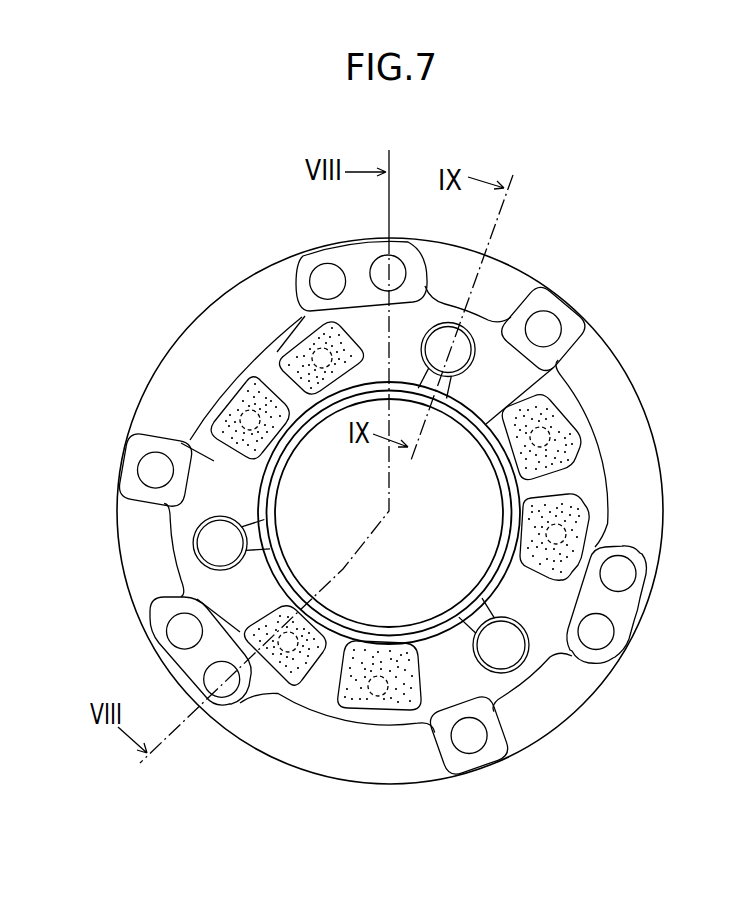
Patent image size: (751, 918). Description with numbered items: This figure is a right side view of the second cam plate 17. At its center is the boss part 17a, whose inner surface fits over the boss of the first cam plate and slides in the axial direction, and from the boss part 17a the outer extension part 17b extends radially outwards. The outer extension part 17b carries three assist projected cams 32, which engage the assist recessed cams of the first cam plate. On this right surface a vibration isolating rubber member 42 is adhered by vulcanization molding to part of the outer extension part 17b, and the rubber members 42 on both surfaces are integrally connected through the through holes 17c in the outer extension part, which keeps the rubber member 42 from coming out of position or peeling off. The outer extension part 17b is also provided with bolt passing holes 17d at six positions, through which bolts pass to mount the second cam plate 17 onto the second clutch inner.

The second cam plate 17 is at (591, 177).
The boss part 17a is at (503, 525).
The outer extension part 17b is at (595, 403).
The through hole 17c is at (383, 690).
The bolt passing hole 17d is at (380, 268).
The assist projected cam 32 is at (462, 342).
The vibration isolating rubber member 42 is at (577, 508).